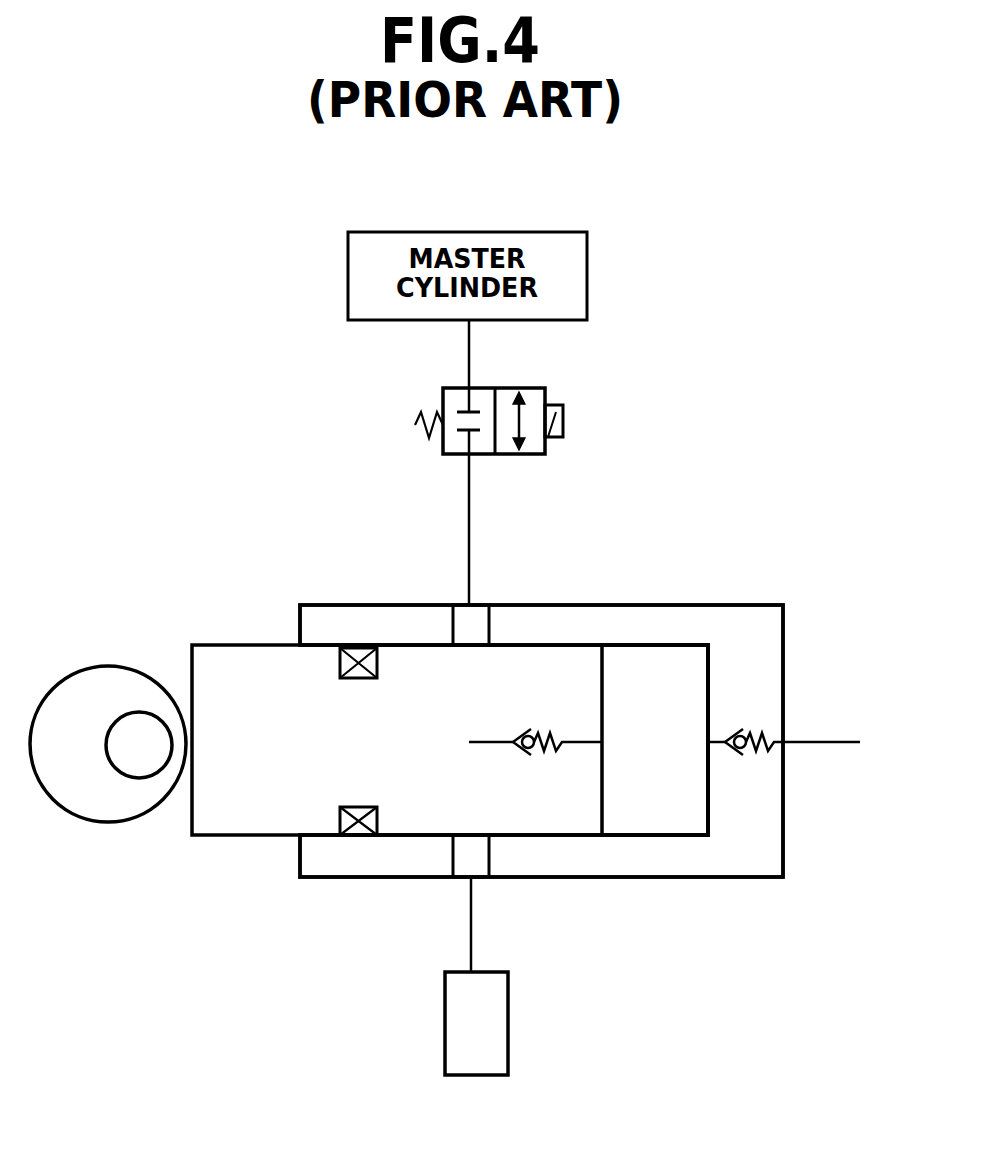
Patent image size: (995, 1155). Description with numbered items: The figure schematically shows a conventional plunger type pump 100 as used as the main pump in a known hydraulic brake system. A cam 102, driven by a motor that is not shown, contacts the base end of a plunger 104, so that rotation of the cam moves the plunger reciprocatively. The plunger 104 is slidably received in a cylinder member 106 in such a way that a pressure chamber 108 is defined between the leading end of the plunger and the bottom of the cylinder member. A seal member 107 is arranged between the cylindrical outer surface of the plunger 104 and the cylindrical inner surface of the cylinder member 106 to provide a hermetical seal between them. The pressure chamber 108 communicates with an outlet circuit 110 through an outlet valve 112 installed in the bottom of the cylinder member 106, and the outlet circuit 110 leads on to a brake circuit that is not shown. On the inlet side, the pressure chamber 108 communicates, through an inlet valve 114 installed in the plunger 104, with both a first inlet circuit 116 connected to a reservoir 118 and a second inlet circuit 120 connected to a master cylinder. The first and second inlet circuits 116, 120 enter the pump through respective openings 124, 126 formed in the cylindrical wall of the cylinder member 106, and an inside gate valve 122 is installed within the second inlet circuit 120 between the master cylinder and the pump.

The pump 100 is at (845, 487).
The cam 102 is at (100, 665).
The plunger 104 is at (228, 660).
The cylinder member 106 is at (673, 858).
The seal member 107 is at (345, 818).
The pressure chamber 108 is at (664, 688).
The outlet circuit 110 is at (833, 740).
The outlet valve 112 is at (742, 750).
The inlet valve 114 is at (527, 735).
The first inlet circuit 116 is at (471, 928).
The reservoir 118 is at (508, 1013).
The second inlet circuit 120 is at (470, 497).
The inside gate valve 122 is at (507, 388).
The opening 124 is at (485, 857).
The opening 126 is at (463, 605).